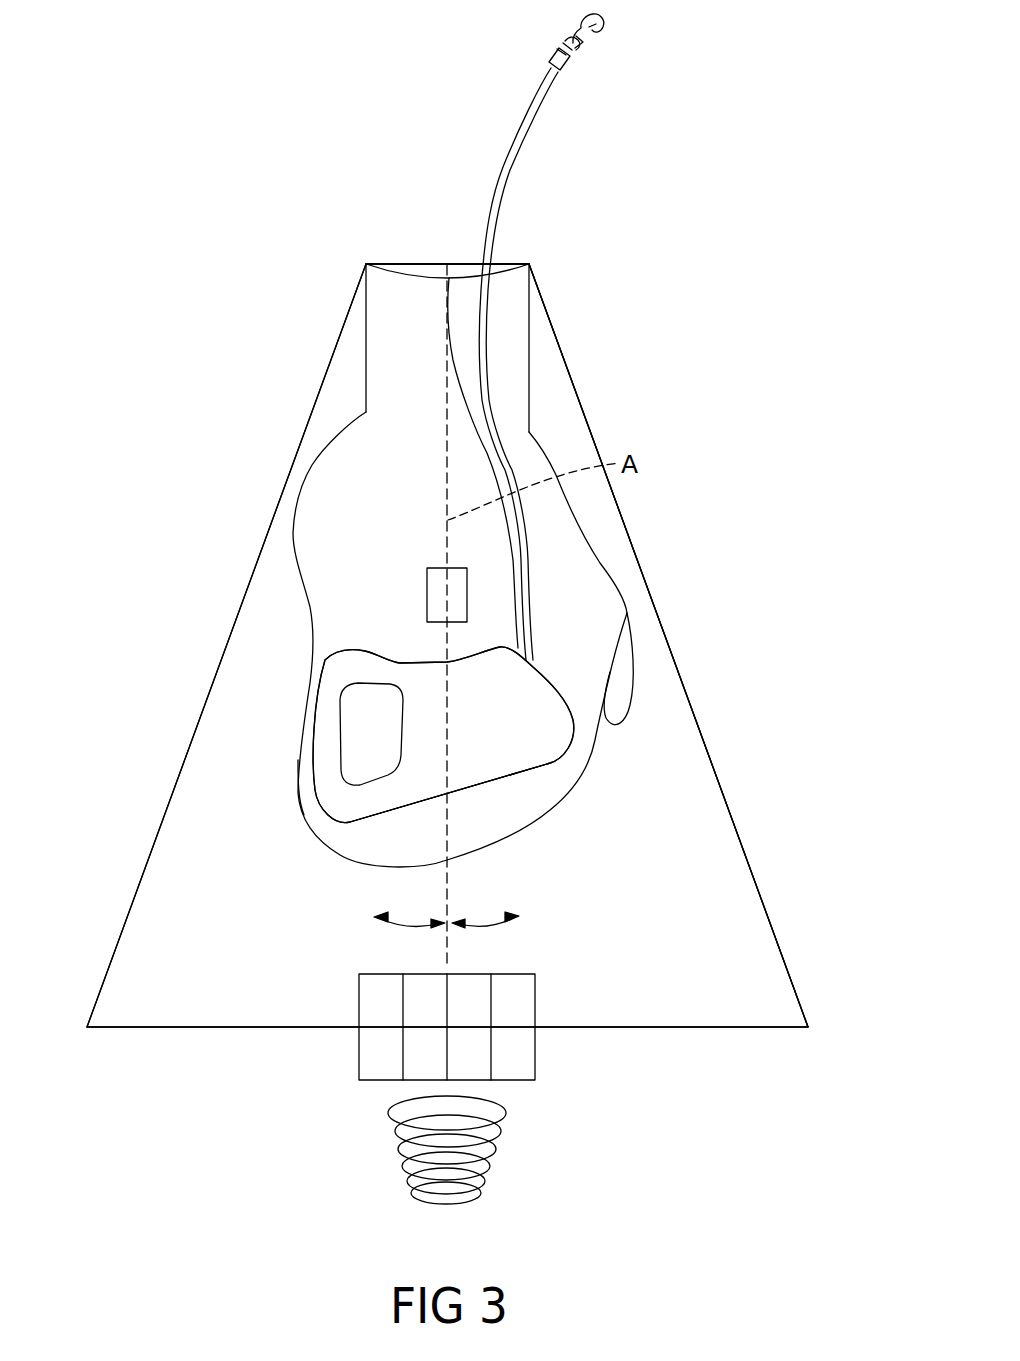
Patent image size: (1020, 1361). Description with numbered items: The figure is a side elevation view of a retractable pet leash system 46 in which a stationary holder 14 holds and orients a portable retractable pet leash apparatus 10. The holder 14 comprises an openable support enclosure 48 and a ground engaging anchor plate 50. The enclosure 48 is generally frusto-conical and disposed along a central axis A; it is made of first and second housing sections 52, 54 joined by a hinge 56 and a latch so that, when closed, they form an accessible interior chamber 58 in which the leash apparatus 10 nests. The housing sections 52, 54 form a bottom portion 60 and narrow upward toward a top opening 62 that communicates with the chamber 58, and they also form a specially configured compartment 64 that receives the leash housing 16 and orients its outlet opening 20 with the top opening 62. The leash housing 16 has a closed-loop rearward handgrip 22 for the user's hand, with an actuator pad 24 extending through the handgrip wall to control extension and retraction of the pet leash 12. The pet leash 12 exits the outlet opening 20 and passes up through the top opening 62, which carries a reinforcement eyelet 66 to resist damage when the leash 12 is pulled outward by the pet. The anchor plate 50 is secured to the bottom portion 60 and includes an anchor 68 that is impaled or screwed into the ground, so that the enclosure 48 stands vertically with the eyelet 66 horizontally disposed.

The portable retractable pet leash apparatus 10 is at (500, 790).
The pet leash 12 is at (531, 110).
The stationary holder or enclosure 14 is at (810, 873).
The leash housing 16 is at (568, 710).
The outlet opening 20 is at (513, 648).
The handle or handgrip 22 is at (340, 722).
The actuator pad or button 24 is at (627, 645).
The retractable pet leash system 46 is at (760, 599).
The openable support housing or enclosure 48 is at (756, 834).
The ground engaging anchor plate 50 is at (358, 1049).
The first housing section 52 is at (227, 640).
The second housing section 54 is at (708, 748).
The hinge 56 is at (460, 583).
The interior chamber 58 is at (334, 480).
The bottom portion 60 is at (185, 1030).
The top opening 62 is at (457, 278).
The compartment 64 is at (299, 762).
The reinforcement eyelet 66 is at (367, 292).
The anchor 68 is at (397, 1152).